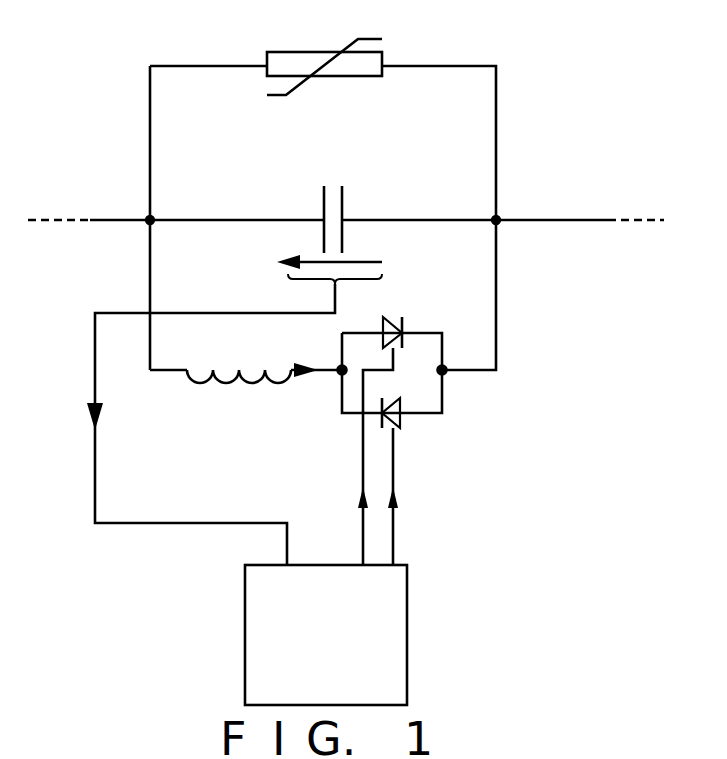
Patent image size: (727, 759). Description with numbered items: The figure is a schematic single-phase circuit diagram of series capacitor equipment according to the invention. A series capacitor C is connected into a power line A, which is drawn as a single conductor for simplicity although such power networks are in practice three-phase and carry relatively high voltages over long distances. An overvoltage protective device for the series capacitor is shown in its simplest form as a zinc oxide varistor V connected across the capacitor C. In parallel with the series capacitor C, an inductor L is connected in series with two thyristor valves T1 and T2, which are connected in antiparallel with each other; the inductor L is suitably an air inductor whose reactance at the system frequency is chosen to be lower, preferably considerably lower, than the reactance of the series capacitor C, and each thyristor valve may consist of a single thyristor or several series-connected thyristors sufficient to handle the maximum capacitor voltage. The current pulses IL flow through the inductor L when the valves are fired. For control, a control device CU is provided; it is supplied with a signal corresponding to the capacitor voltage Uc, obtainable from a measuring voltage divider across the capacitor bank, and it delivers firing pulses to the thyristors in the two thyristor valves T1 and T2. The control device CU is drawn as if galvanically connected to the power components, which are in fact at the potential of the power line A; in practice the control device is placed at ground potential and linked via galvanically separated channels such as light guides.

The power line A is at (573, 220).
The zinc oxide varistor V is at (300, 53).
The series capacitor C is at (345, 205).
The capacitor voltage Uc is at (234, 404).
The inductor L is at (228, 381).
The current pulses through the inductor IL is at (316, 400).
The thyristor valve T1 is at (406, 327).
The thyristor valve T2 is at (400, 426).
The control device CU is at (298, 691).